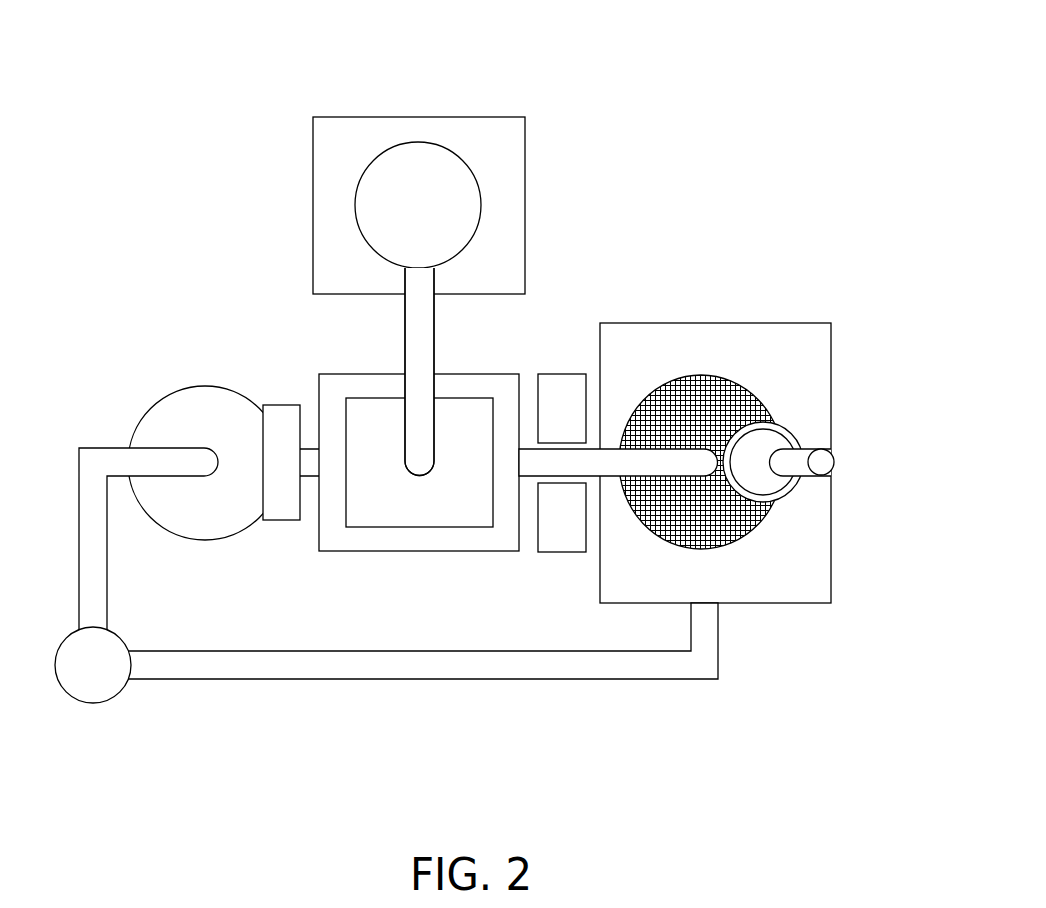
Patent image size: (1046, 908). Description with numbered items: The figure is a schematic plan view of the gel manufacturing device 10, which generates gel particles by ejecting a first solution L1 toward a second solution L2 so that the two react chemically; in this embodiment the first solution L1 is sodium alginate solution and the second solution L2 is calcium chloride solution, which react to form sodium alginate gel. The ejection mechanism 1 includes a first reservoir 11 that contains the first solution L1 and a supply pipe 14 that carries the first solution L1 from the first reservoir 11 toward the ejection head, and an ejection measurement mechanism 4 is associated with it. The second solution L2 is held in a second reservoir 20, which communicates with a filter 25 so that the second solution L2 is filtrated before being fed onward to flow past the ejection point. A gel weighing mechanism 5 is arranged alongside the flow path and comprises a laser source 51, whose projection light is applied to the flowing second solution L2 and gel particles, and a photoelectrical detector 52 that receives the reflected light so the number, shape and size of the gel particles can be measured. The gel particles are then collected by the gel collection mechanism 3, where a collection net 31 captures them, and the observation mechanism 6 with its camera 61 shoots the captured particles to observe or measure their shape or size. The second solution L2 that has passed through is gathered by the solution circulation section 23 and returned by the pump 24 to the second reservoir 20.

The gel manufacturing device 10 is at (722, 78).
The ejection measurement mechanism 4 is at (535, 101).
The first reservoir 11 is at (442, 140).
The first solution L1 is at (407, 158).
The supply pipe 14 is at (414, 335).
The ejection mechanism 1 is at (492, 360).
The gel weighing mechanism 5 is at (575, 309).
The laser source 51 is at (564, 385).
The photoelectrical detector 52 is at (558, 543).
The gel collection mechanism 3 is at (778, 275).
The collection net 31 is at (738, 400).
The observation mechanism 6 is at (804, 423).
The camera 61 is at (780, 440).
The second reservoir 20 is at (238, 388).
The second solution L2 is at (200, 398).
The filter 25 is at (283, 508).
The solution circulation section 23 is at (282, 672).
The pump 24 is at (94, 695).